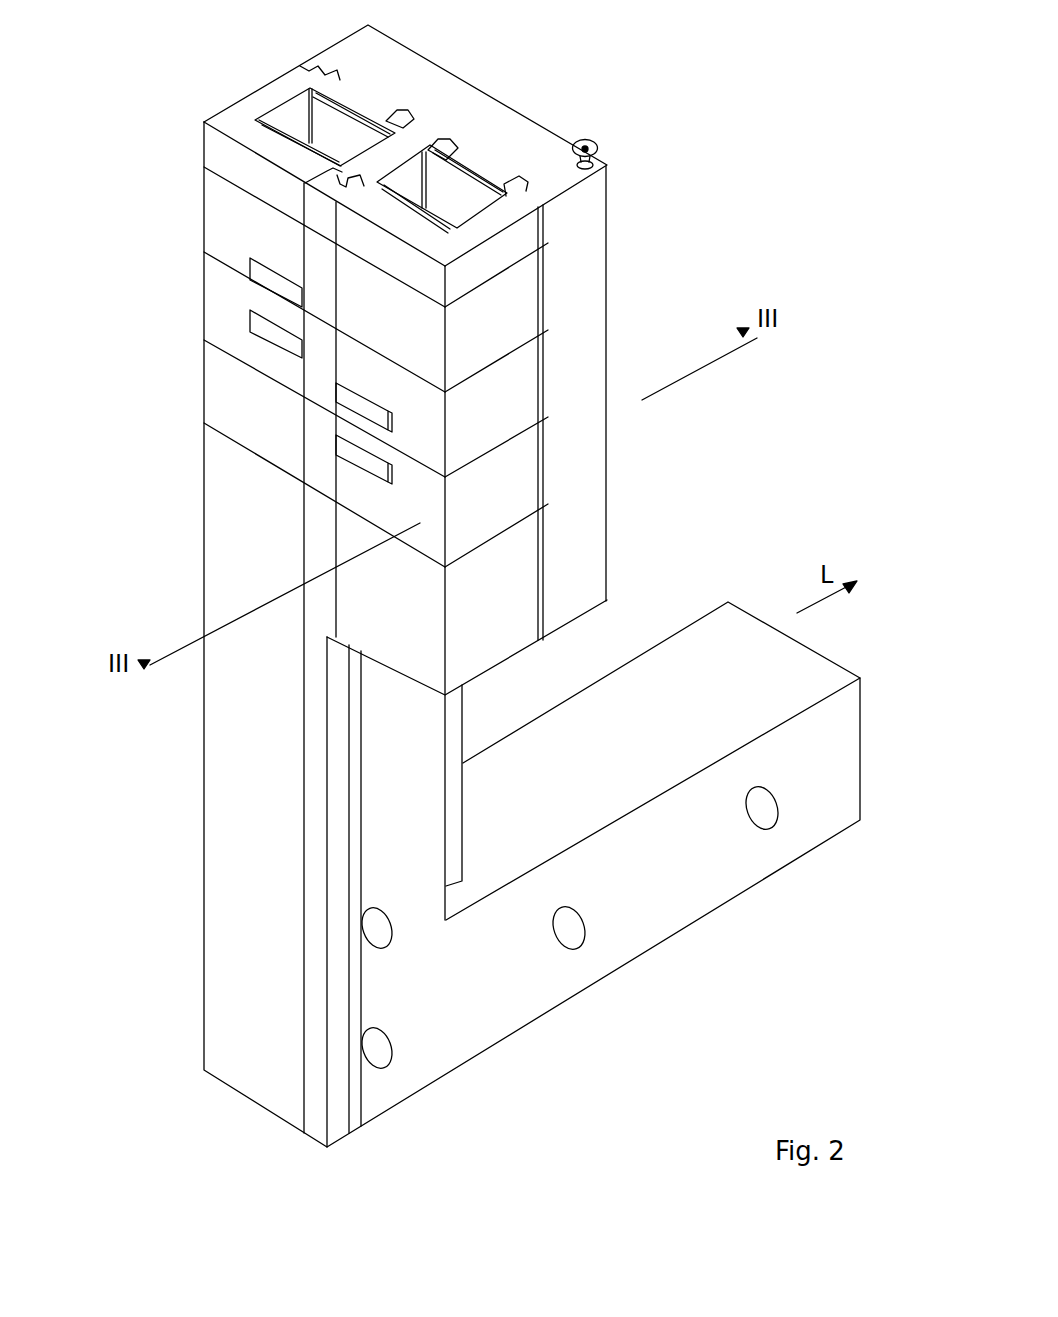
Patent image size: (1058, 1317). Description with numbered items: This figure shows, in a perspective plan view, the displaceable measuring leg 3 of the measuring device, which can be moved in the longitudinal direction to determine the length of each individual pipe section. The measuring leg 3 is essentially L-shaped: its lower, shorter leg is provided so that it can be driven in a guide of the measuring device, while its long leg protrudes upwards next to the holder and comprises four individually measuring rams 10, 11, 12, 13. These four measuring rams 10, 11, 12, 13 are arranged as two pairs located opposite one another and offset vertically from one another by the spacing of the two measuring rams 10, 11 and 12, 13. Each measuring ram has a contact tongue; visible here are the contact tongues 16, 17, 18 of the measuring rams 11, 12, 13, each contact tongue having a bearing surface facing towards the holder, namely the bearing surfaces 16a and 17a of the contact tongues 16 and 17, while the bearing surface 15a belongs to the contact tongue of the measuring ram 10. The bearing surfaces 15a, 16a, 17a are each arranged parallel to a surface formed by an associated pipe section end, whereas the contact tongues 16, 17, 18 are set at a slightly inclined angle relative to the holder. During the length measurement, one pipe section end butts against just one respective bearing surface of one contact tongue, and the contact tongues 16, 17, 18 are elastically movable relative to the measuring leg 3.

The measuring leg 3 is at (662, 187).
The measuring ram 10 is at (510, 482).
The measuring ram 11 is at (498, 403).
The measuring ram 12 is at (219, 293).
The measuring ram 13 is at (216, 220).
The bearing surface 15a is at (363, 467).
The contact tongue 16 is at (420, 428).
The bearing surface 16a is at (269, 279).
The contact tongue 17 is at (220, 322).
The bearing surface 17a is at (268, 333).
The contact tongue 18 is at (219, 208).